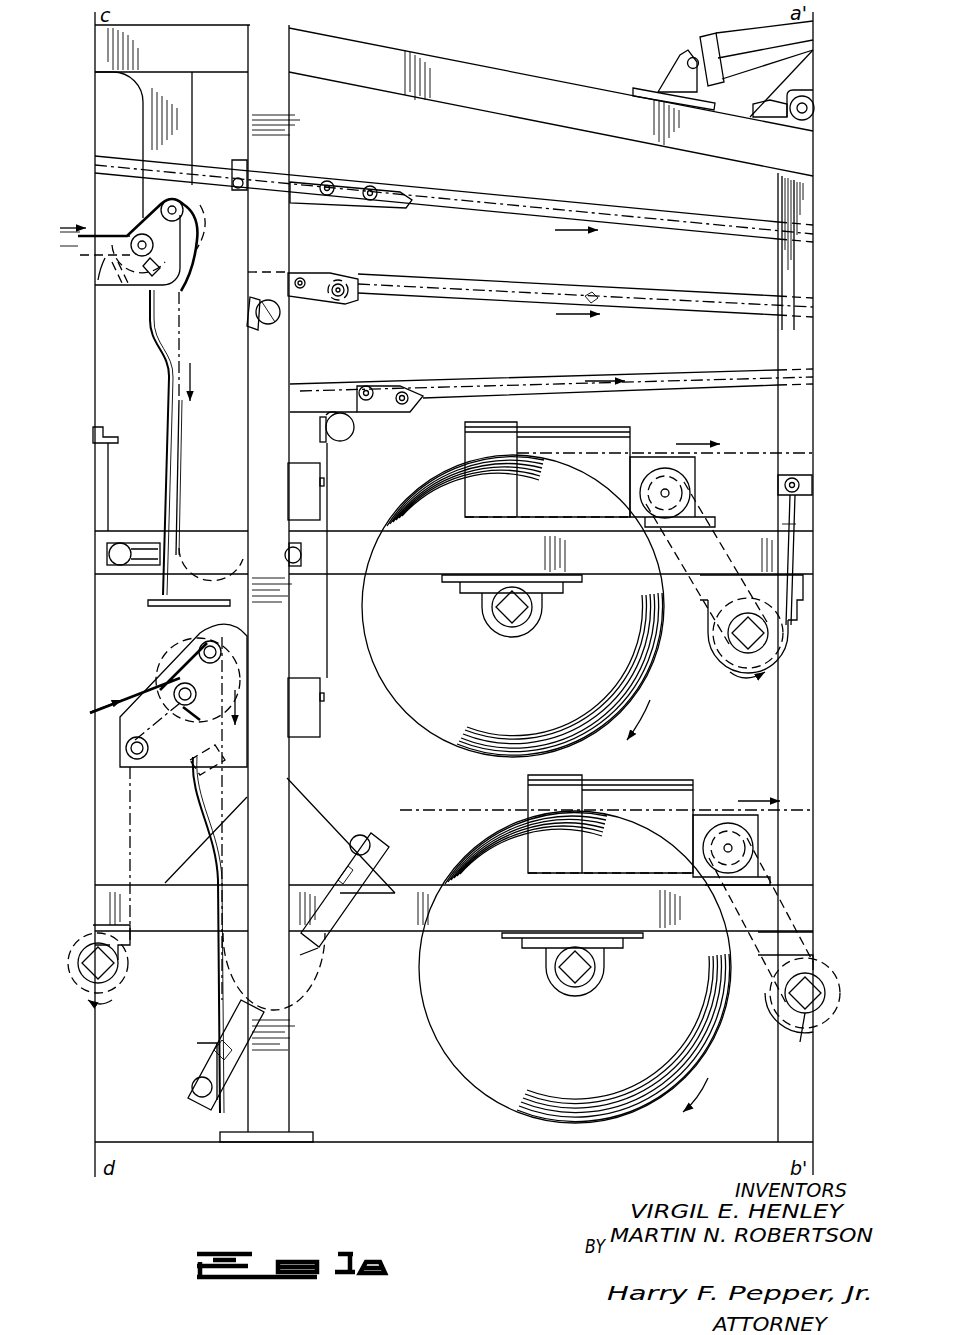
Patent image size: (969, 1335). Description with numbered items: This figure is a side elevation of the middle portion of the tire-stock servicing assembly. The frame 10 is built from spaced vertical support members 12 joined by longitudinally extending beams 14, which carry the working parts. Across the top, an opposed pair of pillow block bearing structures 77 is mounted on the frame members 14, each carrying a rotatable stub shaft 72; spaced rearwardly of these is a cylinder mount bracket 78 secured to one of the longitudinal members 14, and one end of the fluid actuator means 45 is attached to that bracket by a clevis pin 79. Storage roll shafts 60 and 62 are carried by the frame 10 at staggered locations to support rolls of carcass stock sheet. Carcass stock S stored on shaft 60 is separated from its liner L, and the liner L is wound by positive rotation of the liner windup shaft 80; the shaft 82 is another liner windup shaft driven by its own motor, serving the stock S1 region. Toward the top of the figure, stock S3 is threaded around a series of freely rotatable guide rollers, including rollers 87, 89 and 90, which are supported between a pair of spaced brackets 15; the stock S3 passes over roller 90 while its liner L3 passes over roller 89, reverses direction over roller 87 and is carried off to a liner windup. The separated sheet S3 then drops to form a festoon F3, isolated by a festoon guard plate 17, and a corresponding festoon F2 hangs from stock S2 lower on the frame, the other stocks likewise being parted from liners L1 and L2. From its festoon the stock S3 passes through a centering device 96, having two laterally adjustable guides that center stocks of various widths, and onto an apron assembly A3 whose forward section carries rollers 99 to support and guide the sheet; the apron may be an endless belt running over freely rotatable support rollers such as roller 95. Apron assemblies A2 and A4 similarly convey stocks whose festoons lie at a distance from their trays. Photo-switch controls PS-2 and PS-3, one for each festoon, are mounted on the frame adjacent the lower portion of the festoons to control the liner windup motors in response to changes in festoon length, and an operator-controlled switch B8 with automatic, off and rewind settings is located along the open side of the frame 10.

The frame 10 is at (275, 1103).
The vertical support members 12 is at (278, 770).
The longitudinally extending beams 14 is at (223, 38).
The brackets 15 is at (182, 120).
The festoon guard plate 17 is at (160, 370).
The fluid actuator means 45 is at (755, 52).
The storage roll shaft 60 is at (566, 980).
The storage roll shaft 62 is at (496, 616).
The stub shaft 72 is at (814, 104).
The pillow block bearing structures 77 is at (775, 114).
The cylinder mount bracket 78 is at (666, 91).
The clevis pin 79 is at (690, 58).
The liner windup shaft 80 is at (791, 1015).
The liner windup shaft 82 is at (712, 644).
The guide roller 87 is at (94, 278).
The guide roller 89 is at (135, 222).
The guide roller 90 is at (185, 238).
The support roller 95 is at (590, 294).
The centering device 96 is at (283, 318).
The rollers 99 is at (338, 282).
The apron assembly A2 is at (498, 381).
The apron assembly A3 is at (510, 280).
The apron assembly A4 is at (520, 185).
The operator controlled switch B8 is at (310, 495).
The loop F2 is at (292, 1007).
The festoon F3 is at (222, 572).
The liner L is at (802, 1030).
The lever L1 is at (789, 526).
The lever L2 is at (130, 796).
The liner material L3 is at (124, 285).
The photo-switch control PS-2 is at (369, 826).
The photo-switch control PS-3 is at (148, 540).
The carcass stock S is at (585, 1040).
The carcass stock S1 is at (520, 691).
The carcass stock S2 is at (178, 664).
The carcass stock sheet S3 is at (195, 196).